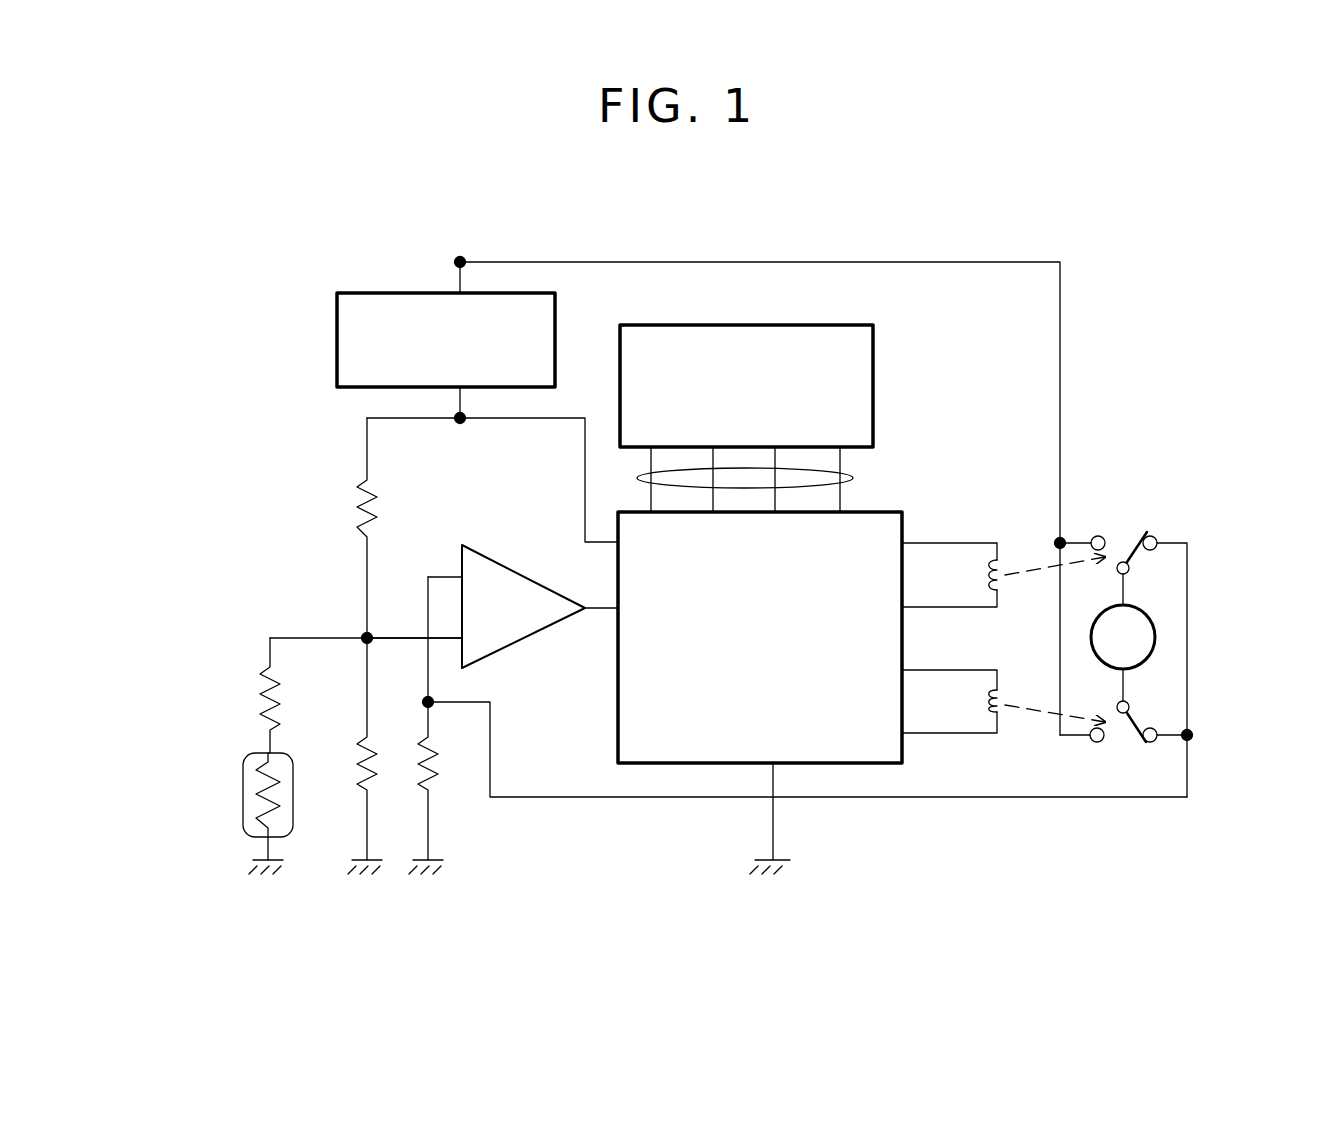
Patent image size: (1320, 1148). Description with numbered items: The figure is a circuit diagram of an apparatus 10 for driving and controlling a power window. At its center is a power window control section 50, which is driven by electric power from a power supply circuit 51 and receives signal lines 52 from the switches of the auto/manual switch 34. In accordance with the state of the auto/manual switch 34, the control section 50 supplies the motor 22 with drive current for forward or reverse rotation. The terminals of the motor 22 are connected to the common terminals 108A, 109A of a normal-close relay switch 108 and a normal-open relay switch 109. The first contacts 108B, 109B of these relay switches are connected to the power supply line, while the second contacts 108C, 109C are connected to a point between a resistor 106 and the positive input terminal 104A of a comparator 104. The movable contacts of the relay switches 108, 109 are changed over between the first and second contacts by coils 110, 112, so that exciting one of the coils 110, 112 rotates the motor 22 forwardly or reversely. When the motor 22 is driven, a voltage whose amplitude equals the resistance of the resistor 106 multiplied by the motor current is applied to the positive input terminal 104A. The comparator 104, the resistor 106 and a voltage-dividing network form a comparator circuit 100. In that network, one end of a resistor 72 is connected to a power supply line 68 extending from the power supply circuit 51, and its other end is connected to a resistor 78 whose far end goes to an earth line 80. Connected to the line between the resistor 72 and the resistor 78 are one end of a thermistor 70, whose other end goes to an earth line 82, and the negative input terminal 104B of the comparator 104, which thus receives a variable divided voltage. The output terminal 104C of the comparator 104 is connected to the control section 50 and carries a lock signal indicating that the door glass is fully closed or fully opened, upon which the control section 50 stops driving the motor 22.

The window control system 10 is at (1103, 267).
The motor 22 is at (1155, 640).
The auto/manual switch 34 is at (833, 325).
The power window control section 50 is at (835, 763).
The power supply circuit 51 is at (512, 293).
The signal lines 52 is at (845, 480).
The power supply line 68 is at (490, 420).
The thermistor 70 is at (243, 790).
The resistor 72 is at (352, 503).
The resistor 78 is at (352, 752).
The earth line 80 is at (362, 820).
The earth line 82 is at (258, 847).
The comparator circuit 100 is at (230, 600).
The comparator 104 is at (533, 640).
The positive input terminal 104A is at (462, 575).
The negative input terminal 104B is at (455, 641).
The output terminal 104C is at (618, 583).
The resistor 106 is at (440, 768).
The normal-close relay switch 108 is at (1181, 596).
The common terminal 108A is at (1128, 572).
The first contact 108B is at (1100, 536).
The second contact 108C is at (1158, 541).
The normal-open relay switch 109 is at (1179, 768).
The common terminal 109A is at (1129, 709).
The first contact 109B is at (1097, 743).
The second contact 109C is at (1160, 718).
The coil 110 is at (992, 570).
The coil 112 is at (982, 705).